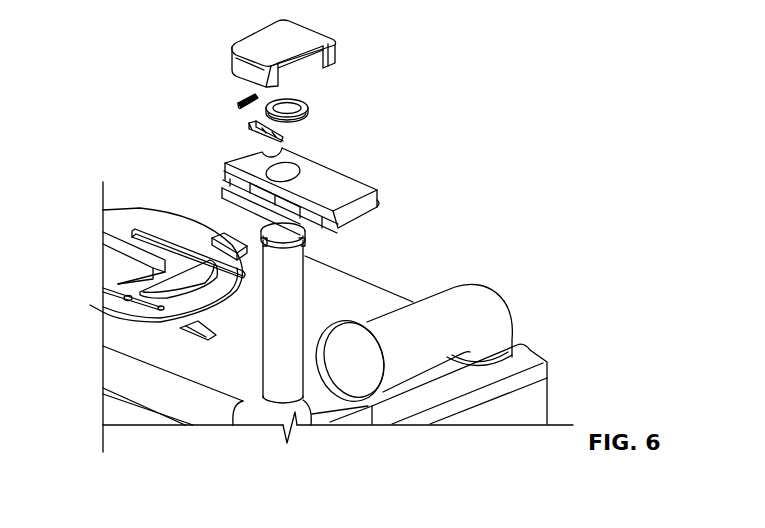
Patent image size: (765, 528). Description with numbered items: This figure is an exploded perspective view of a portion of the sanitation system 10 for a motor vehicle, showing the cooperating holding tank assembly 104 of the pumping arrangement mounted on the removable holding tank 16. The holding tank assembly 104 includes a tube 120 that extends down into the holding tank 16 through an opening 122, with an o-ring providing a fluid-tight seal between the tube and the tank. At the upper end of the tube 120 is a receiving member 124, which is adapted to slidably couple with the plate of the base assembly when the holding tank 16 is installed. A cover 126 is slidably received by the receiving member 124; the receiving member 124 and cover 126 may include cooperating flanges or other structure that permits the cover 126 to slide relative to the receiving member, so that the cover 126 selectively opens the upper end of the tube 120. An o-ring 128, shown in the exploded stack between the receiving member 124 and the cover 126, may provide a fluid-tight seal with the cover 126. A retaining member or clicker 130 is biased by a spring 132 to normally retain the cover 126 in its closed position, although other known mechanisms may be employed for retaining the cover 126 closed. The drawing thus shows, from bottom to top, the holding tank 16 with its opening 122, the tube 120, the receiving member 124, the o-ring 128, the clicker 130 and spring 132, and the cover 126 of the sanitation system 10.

The sanitation system 10 is at (97, 96).
The holding tank 16 is at (98, 372).
The holding tank assembly 104 is at (400, 229).
The tube 120 is at (303, 305).
The opening 122 is at (315, 425).
The receiving member 124 is at (344, 176).
The cover 126 is at (306, 32).
The gasket ring 128 is at (310, 100).
The retaining member or clicker 130 is at (247, 126).
The spring 132 is at (243, 95).